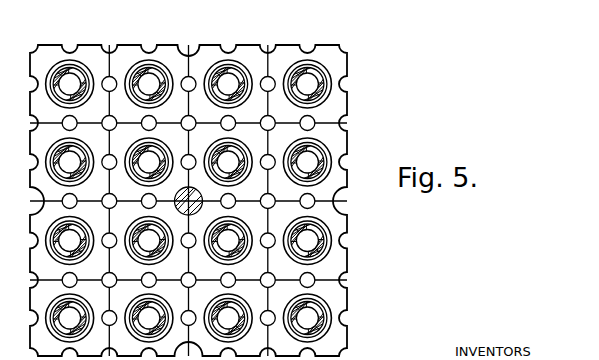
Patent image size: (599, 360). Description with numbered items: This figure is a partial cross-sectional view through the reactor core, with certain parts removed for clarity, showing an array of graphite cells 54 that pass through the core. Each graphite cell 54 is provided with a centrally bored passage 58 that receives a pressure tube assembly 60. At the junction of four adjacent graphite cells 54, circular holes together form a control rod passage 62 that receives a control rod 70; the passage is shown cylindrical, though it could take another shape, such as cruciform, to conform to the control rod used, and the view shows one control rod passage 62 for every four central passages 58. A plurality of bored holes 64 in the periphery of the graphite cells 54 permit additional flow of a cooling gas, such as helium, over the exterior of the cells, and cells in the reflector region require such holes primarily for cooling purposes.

The graphite cell 54 is at (347, 64).
The centrally bored passage 58 is at (328, 97).
The pressure tube assembly 60 is at (335, 66).
The control rod passage 62 is at (190, 188).
The bored holes 64 is at (266, 76).
The control rod 70 is at (203, 208).